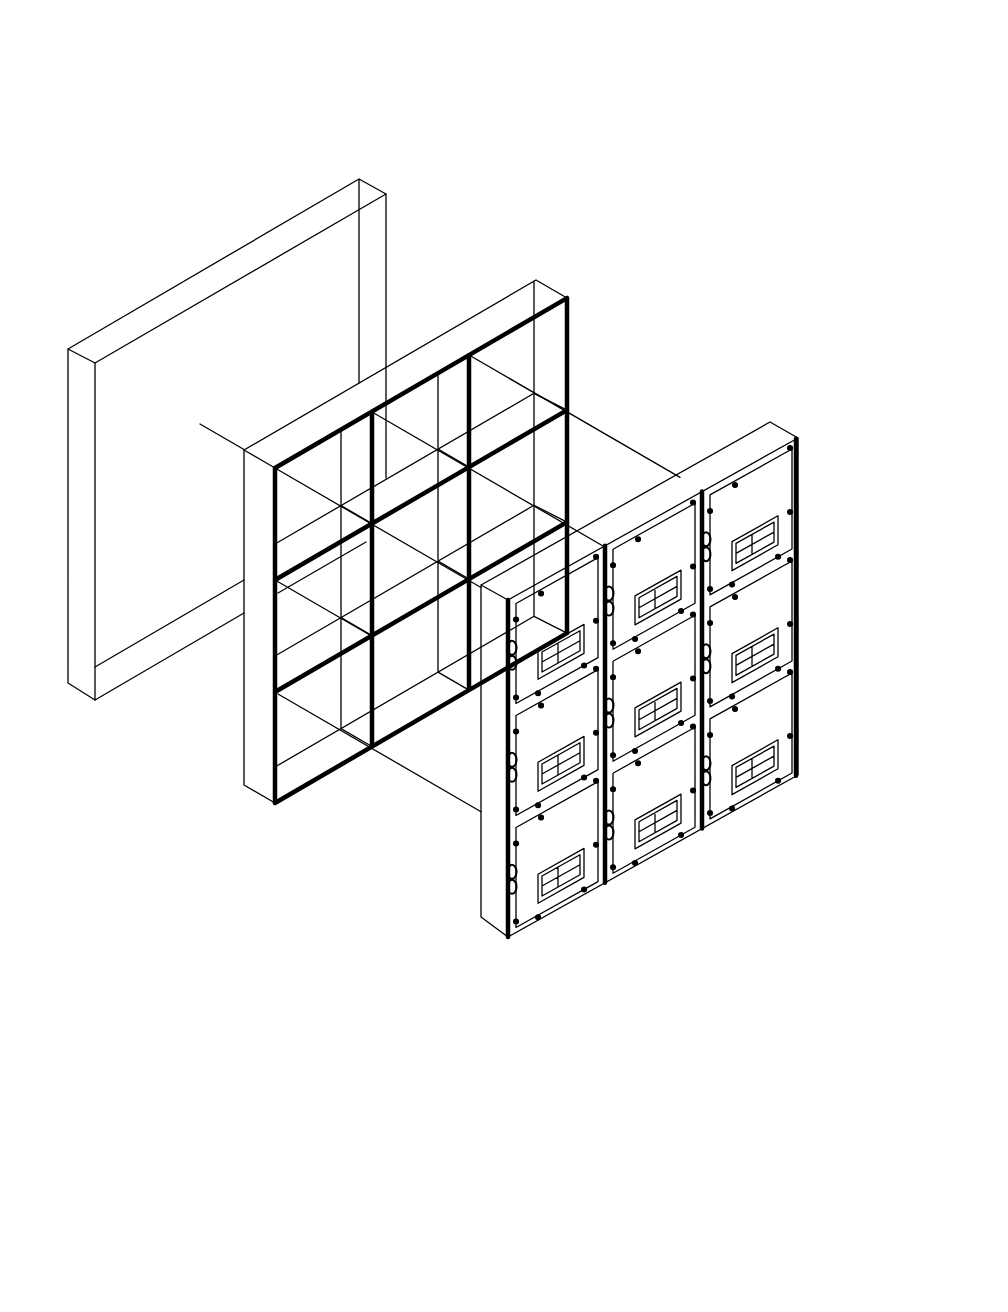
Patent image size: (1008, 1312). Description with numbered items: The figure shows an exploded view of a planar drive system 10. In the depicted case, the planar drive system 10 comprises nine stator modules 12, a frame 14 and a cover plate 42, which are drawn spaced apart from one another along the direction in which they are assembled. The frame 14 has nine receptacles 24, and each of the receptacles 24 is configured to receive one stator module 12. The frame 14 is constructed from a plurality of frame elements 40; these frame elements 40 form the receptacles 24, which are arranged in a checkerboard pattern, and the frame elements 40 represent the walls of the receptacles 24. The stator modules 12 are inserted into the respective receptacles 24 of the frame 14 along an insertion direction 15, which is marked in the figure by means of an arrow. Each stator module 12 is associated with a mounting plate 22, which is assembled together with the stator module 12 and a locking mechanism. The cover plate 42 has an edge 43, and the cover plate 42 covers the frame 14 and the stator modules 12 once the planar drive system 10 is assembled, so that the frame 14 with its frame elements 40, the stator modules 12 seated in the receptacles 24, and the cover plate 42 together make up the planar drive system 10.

The planar drive system 10 is at (676, 123).
The stator module 12 is at (667, 580).
The frame 14 is at (408, 502).
The insertion direction 15 is at (649, 364).
The mounting plate 22 is at (761, 503).
The receptacle 24 is at (288, 740).
The frame element 40 is at (360, 579).
The cover plate 42 is at (227, 379).
The edge 43 is at (174, 307).